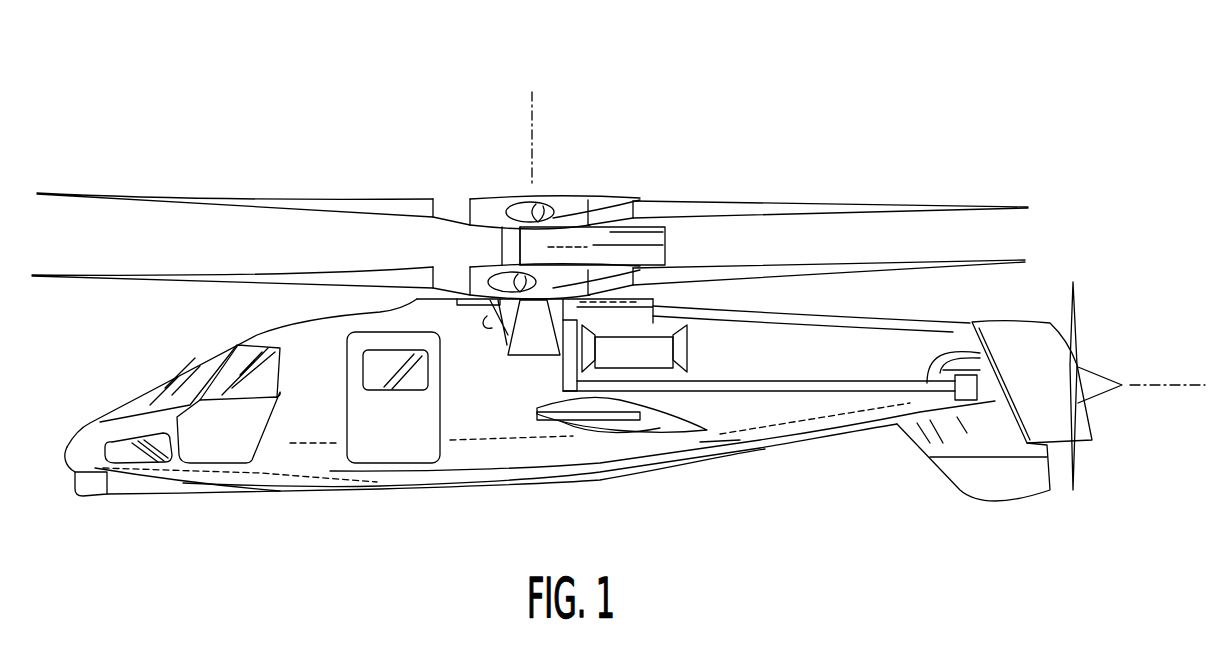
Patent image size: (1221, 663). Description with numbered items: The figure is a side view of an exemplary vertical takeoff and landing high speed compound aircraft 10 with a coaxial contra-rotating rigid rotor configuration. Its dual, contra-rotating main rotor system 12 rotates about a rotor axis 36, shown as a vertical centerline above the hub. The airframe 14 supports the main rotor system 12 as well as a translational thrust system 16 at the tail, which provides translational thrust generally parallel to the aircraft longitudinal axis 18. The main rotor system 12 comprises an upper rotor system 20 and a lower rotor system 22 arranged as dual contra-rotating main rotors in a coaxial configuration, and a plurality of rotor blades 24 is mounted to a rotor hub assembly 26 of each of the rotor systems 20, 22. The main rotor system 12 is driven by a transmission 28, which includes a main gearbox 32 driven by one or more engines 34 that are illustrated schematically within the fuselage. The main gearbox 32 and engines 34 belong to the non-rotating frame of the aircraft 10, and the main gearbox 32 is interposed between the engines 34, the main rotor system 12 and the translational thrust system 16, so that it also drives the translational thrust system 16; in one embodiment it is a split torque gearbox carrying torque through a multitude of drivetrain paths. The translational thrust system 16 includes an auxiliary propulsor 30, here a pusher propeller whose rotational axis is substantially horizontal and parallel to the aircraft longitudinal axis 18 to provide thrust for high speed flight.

The rotary wing aircraft 10 is at (668, 121).
The main rotor system 12 is at (496, 156).
The airframe 14 is at (497, 491).
The translational thrust system 16 is at (1078, 300).
The aircraft longitudinal axis 18 is at (1148, 392).
The upper rotor system 20 is at (124, 193).
The lower rotor system 22 is at (96, 280).
The rotor blades 24 is at (240, 199).
The rotor hub assembly 26 is at (478, 205).
The transmission 28 is at (517, 348).
The auxiliary propulsor 30 is at (1106, 370).
The main gearbox 32 is at (560, 367).
The engines 34 is at (688, 357).
The rotor axis 36 is at (528, 112).